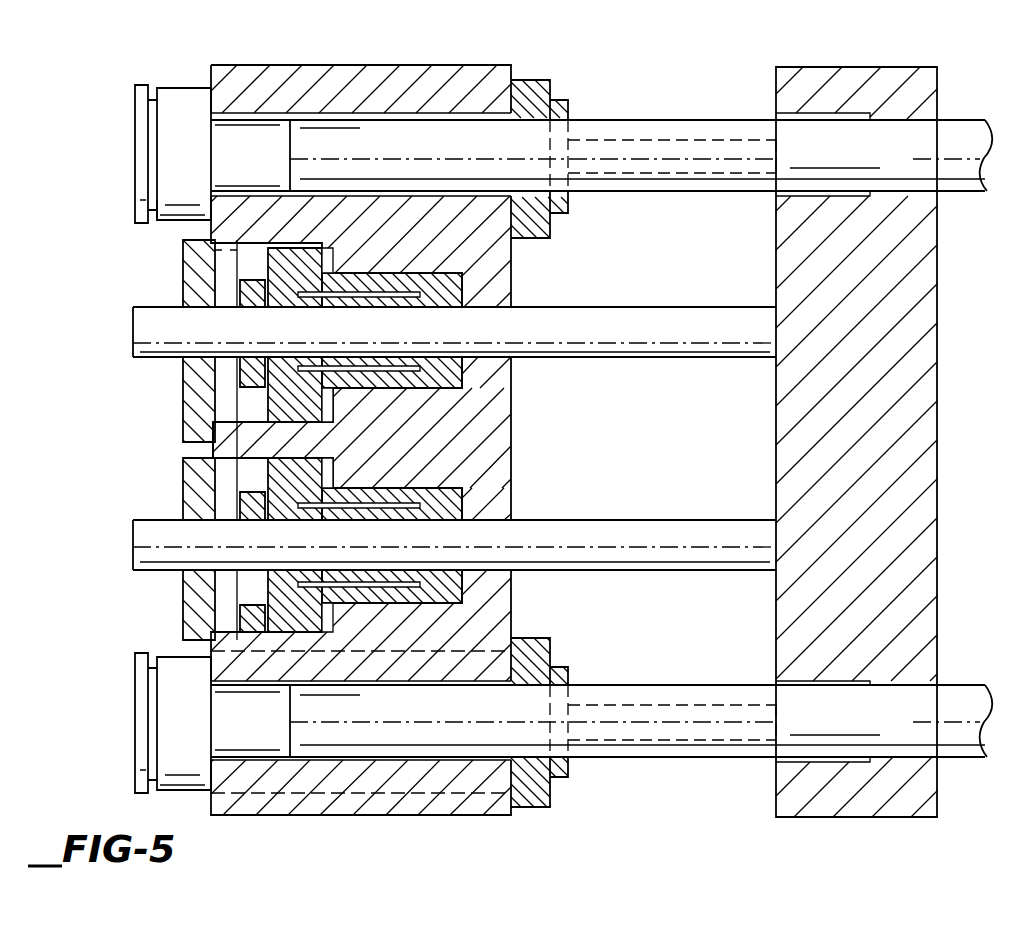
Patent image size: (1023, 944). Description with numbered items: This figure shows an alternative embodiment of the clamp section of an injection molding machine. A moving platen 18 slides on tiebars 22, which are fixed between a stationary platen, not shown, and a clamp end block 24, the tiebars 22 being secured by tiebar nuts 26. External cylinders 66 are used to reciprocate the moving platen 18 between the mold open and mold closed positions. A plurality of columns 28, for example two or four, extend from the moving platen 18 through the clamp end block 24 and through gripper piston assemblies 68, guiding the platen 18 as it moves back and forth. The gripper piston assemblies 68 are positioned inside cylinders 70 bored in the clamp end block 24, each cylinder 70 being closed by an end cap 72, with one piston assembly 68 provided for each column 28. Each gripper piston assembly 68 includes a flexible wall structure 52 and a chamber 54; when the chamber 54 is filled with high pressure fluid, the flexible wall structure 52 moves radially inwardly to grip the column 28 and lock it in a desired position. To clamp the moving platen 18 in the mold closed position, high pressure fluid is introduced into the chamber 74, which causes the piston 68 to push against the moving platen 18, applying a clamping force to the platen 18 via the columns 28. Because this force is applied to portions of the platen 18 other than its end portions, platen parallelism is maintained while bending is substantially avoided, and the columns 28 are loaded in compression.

The moving platen 18 is at (902, 457).
The tiebars 22 is at (712, 172).
The clamp end block 24 is at (218, 72).
The tiebar nuts 26 is at (160, 150).
The columns 28 is at (668, 340).
The flexible wall structure 52 is at (395, 303).
The chamber 54 is at (362, 303).
The external cylinders 66 is at (570, 107).
The gripper piston assemblies 68 is at (240, 418).
The cylinders 70 is at (250, 472).
The end cap 72 is at (215, 487).
The chamber 74 is at (240, 268).